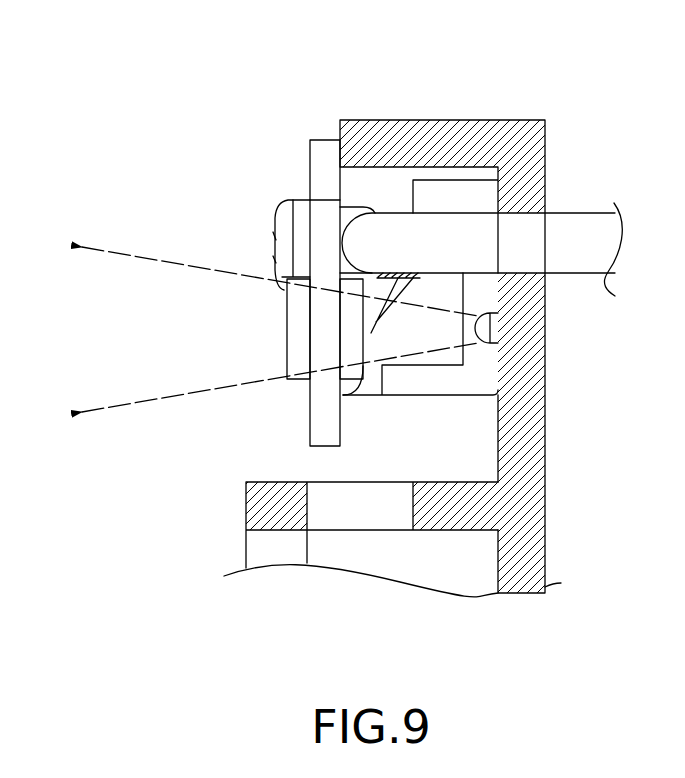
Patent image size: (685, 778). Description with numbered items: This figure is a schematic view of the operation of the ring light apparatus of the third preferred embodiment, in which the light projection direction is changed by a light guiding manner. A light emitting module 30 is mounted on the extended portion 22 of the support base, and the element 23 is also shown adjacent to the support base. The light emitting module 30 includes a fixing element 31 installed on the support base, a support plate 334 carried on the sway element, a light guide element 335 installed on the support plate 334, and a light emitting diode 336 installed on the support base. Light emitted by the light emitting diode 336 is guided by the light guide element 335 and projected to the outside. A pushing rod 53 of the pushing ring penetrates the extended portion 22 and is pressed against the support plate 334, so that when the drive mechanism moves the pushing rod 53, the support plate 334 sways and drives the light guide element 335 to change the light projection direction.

The extended portion 22 is at (465, 137).
The base 23 is at (262, 502).
The light emitting module 30 is at (287, 181).
The fixing element 31 is at (440, 385).
The pushing rod 53 is at (391, 230).
The support plate 334 is at (322, 163).
The light guide element 335 is at (292, 323).
The light emitting diode 336 is at (482, 330).